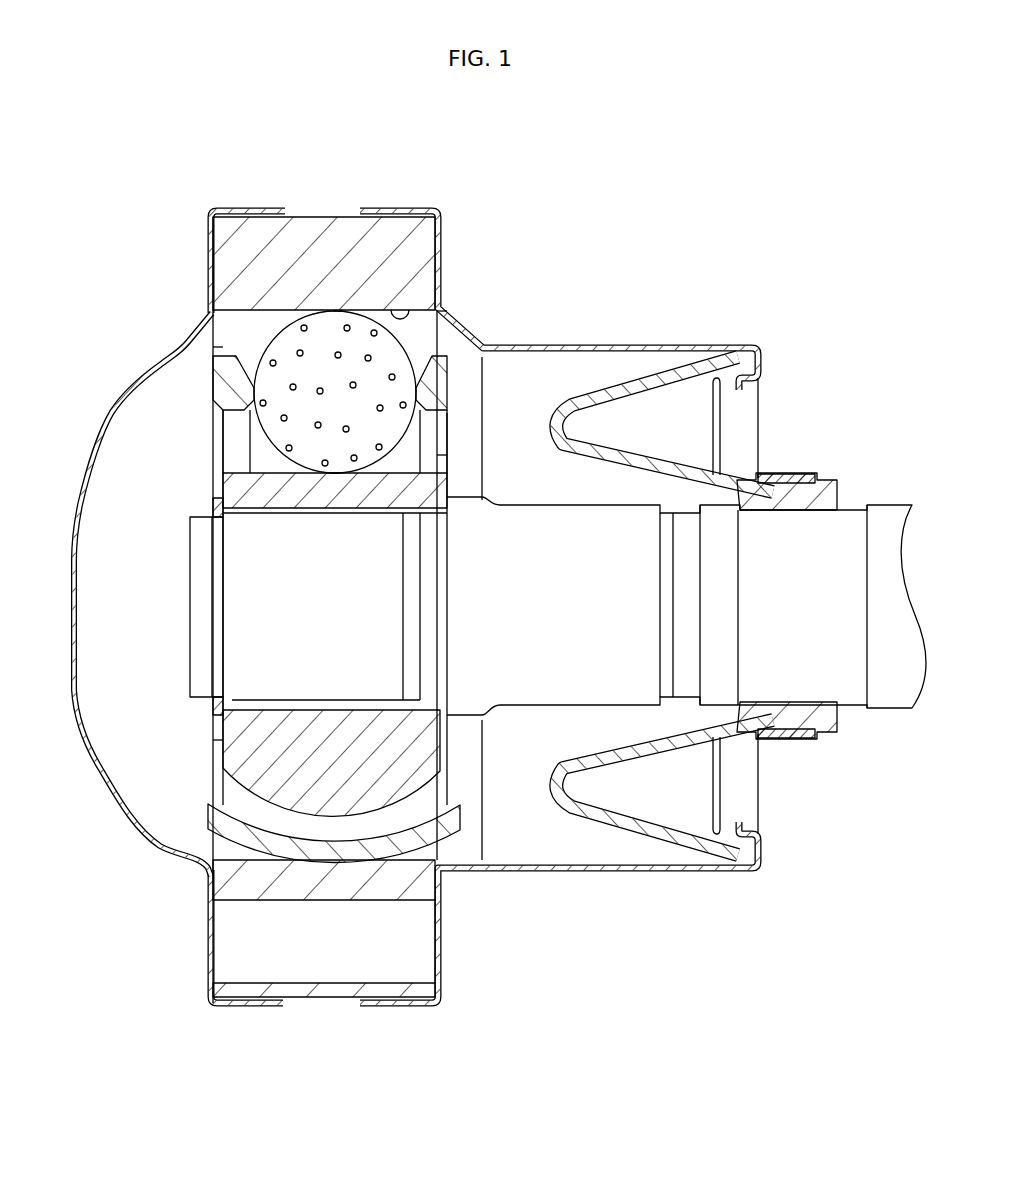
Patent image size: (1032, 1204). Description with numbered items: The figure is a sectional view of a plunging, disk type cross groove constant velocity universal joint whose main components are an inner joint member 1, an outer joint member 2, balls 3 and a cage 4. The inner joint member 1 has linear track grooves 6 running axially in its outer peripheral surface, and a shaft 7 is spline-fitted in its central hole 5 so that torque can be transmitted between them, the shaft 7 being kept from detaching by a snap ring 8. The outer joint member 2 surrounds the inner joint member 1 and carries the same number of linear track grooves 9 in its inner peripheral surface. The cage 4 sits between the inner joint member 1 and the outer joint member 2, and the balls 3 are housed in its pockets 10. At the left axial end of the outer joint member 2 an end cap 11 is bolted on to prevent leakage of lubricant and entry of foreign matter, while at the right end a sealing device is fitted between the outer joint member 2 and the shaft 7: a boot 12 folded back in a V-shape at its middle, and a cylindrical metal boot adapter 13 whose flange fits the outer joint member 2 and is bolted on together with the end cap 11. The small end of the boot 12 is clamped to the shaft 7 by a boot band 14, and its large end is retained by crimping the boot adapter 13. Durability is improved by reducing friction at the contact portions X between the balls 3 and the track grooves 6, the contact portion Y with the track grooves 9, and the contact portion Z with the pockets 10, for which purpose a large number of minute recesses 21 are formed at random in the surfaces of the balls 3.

The inner joint member 1 is at (216, 744).
The outer joint member 2 is at (331, 214).
The balls 3 is at (318, 343).
The cage 4 is at (226, 818).
The central hole 5 is at (266, 508).
The track grooves 6 is at (425, 468).
The shaft 7 is at (897, 500).
The snap ring 8 is at (215, 707).
The track grooves 9 is at (428, 305).
The pockets 10 is at (232, 347).
The end cap 11 is at (90, 457).
The boot 12 is at (603, 467).
The boot adapter 13 is at (590, 344).
The boot band 14 is at (786, 739).
The minute recesses 21 is at (281, 418).
The contact portions X is at (338, 469).
The contact portion Y is at (342, 327).
The contact portion Z is at (413, 352).